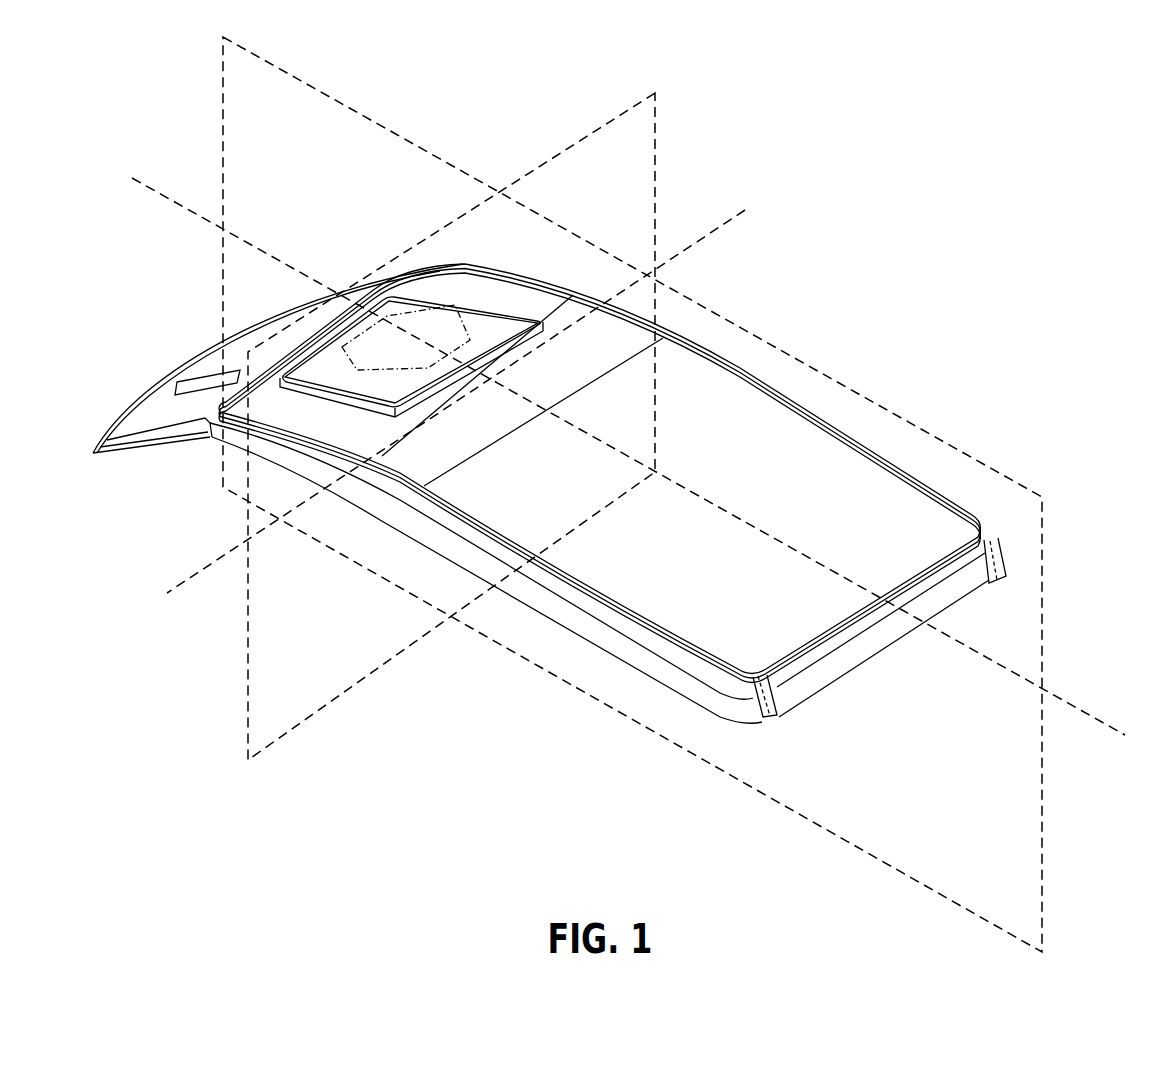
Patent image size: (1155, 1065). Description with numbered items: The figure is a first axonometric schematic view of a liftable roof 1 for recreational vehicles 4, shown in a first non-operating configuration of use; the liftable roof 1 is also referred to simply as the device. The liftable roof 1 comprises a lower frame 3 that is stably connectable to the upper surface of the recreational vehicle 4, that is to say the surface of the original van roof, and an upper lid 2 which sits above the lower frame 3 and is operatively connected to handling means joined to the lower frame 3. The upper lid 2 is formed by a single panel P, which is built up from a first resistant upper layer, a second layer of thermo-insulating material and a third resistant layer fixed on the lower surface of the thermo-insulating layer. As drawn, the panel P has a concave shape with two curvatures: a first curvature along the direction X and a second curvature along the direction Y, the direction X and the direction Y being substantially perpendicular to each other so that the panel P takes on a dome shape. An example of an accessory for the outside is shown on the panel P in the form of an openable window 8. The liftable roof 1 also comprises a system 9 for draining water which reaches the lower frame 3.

The liftable roof 1 is at (822, 270).
The upper lid 2 is at (866, 535).
The lower frame 3 is at (622, 668).
The recreational vehicle 4 is at (499, 713).
The openable window 8 is at (437, 318).
The system for draining water 9 is at (782, 696).
The panel P is at (772, 446).
The direction X is at (1080, 694).
The direction Y is at (186, 562).